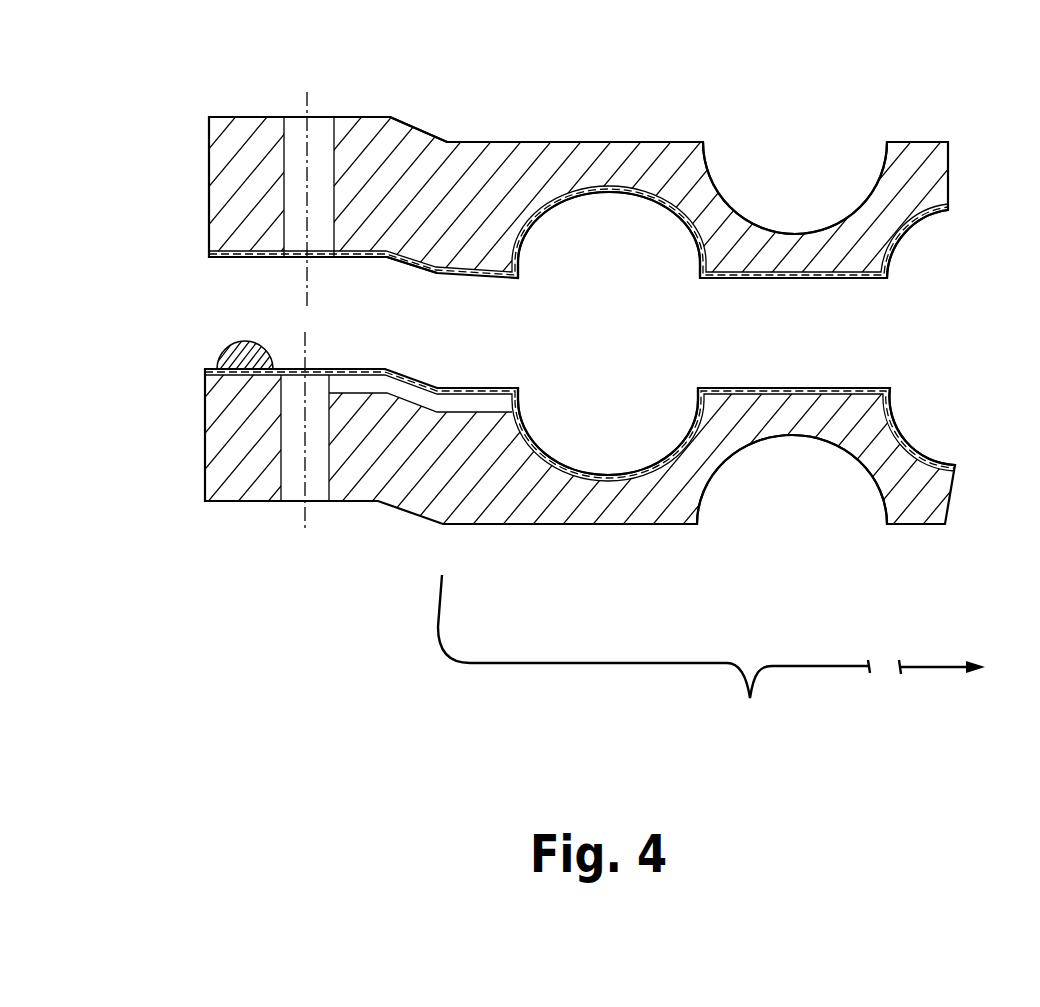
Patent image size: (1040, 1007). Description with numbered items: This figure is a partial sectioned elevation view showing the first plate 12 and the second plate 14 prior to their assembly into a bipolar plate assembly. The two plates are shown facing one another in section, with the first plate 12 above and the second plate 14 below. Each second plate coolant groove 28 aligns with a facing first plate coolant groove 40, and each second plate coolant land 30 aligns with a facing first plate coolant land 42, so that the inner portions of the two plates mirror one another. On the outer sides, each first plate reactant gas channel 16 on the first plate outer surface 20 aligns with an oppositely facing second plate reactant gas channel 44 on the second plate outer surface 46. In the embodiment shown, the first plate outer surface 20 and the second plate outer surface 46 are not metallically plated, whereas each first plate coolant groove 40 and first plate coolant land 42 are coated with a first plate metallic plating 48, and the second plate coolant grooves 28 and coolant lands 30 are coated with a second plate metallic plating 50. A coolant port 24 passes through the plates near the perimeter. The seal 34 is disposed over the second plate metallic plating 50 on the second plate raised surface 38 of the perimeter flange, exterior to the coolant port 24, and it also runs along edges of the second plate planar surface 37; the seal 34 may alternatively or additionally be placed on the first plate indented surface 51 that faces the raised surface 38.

The first plate 12 is at (686, 143).
The second plate 14 is at (495, 510).
The first plate reactant gas channel 16 is at (822, 163).
The first plate outer surface 20 is at (476, 141).
The coolant port 24 is at (315, 485).
The second plate coolant groove 28 is at (602, 435).
The second plate coolant land 30 is at (818, 395).
The seal 34 is at (226, 348).
The second plate planar surface 37 is at (711, 656).
The second plate raised surface 38 is at (357, 372).
The first plate coolant groove 40 is at (593, 217).
The first plate coolant land 42 is at (888, 283).
The second plate reactant gas channel 44 is at (770, 480).
The second plate outer surface 46 is at (648, 522).
The first plate metallic plating 48 is at (617, 192).
The second plate metallic plating 50 is at (850, 388).
The first plate indented surface 51 is at (358, 258).